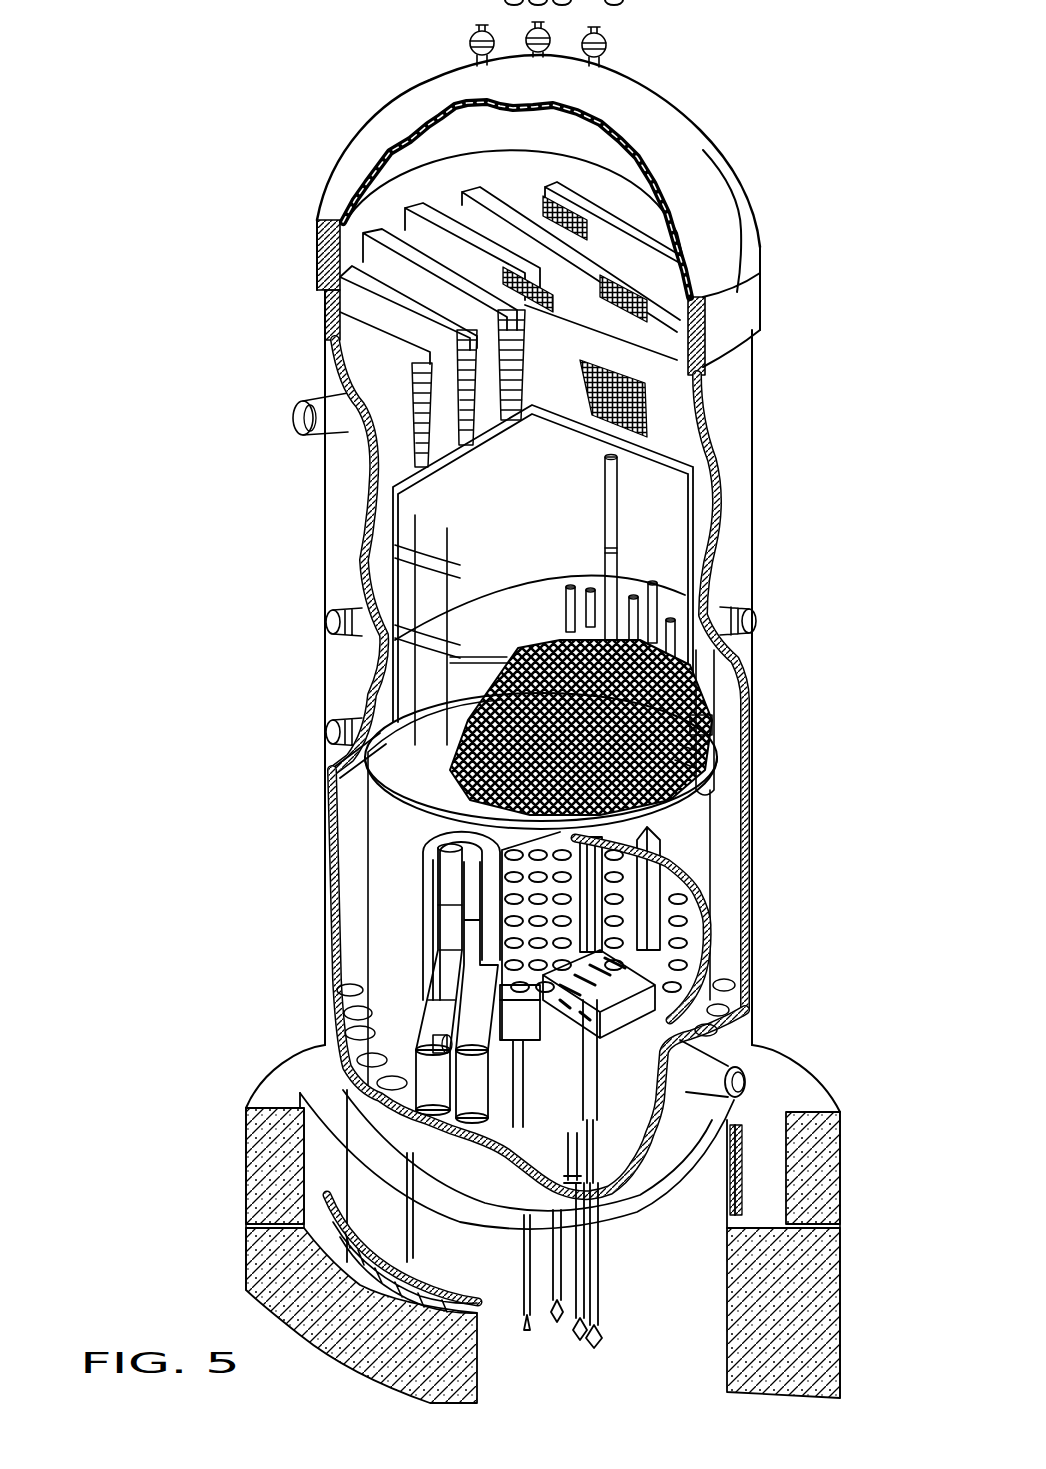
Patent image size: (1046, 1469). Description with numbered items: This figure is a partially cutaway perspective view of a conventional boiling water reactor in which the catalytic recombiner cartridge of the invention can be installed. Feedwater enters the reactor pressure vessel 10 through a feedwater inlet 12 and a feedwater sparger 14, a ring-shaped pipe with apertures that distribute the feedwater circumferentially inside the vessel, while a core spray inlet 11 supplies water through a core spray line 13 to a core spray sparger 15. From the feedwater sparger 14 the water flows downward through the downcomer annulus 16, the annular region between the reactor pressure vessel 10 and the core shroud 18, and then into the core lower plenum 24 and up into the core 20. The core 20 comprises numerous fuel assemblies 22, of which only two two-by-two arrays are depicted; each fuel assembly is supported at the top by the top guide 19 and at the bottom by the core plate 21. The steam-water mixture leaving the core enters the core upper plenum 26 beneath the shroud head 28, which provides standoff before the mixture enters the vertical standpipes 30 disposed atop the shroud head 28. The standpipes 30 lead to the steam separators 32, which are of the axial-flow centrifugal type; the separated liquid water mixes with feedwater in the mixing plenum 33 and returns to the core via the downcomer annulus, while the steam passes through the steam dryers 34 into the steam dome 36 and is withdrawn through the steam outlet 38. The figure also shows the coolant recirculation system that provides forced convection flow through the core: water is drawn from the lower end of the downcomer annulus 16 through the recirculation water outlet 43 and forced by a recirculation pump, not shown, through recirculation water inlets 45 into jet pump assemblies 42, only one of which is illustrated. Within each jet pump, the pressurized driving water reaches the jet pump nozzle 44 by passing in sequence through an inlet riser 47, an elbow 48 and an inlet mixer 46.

The reactor pressure vessel 10 is at (327, 960).
The core spray inlet 11 is at (328, 618).
The feedwater inlet 12 is at (755, 625).
The core spray line 13 is at (700, 728).
The feedwater sparger 14 is at (706, 625).
The core spray sparger 15 is at (696, 782).
The downcomer annulus 16 is at (343, 929).
The core shroud 18 is at (376, 818).
The top guide 19 is at (697, 695).
The core 20 is at (683, 853).
The core plate 21 is at (694, 918).
The fuel assemblies 22 is at (620, 842).
The core lower plenum 24 is at (620, 1127).
The core upper plenum 26 is at (546, 641).
The shroud head 28 is at (487, 592).
The vertical standpipes 30 is at (610, 575).
The steam separators 32 is at (607, 487).
The mixing plenum 33 is at (575, 519).
The steam dryers 34 is at (533, 353).
The steam dome 36 is at (440, 135).
The steam outlet 38 is at (297, 413).
The jet pump assemblies 42 is at (405, 899).
The recirculation water outlet 43 is at (735, 1085).
The jet pump nozzle 44 is at (433, 1096).
The recirculation water inlets 45 is at (431, 1042).
The inlet mixer 46 is at (428, 882).
The inlet riser 47 is at (447, 942).
The elbow 48 is at (428, 853).